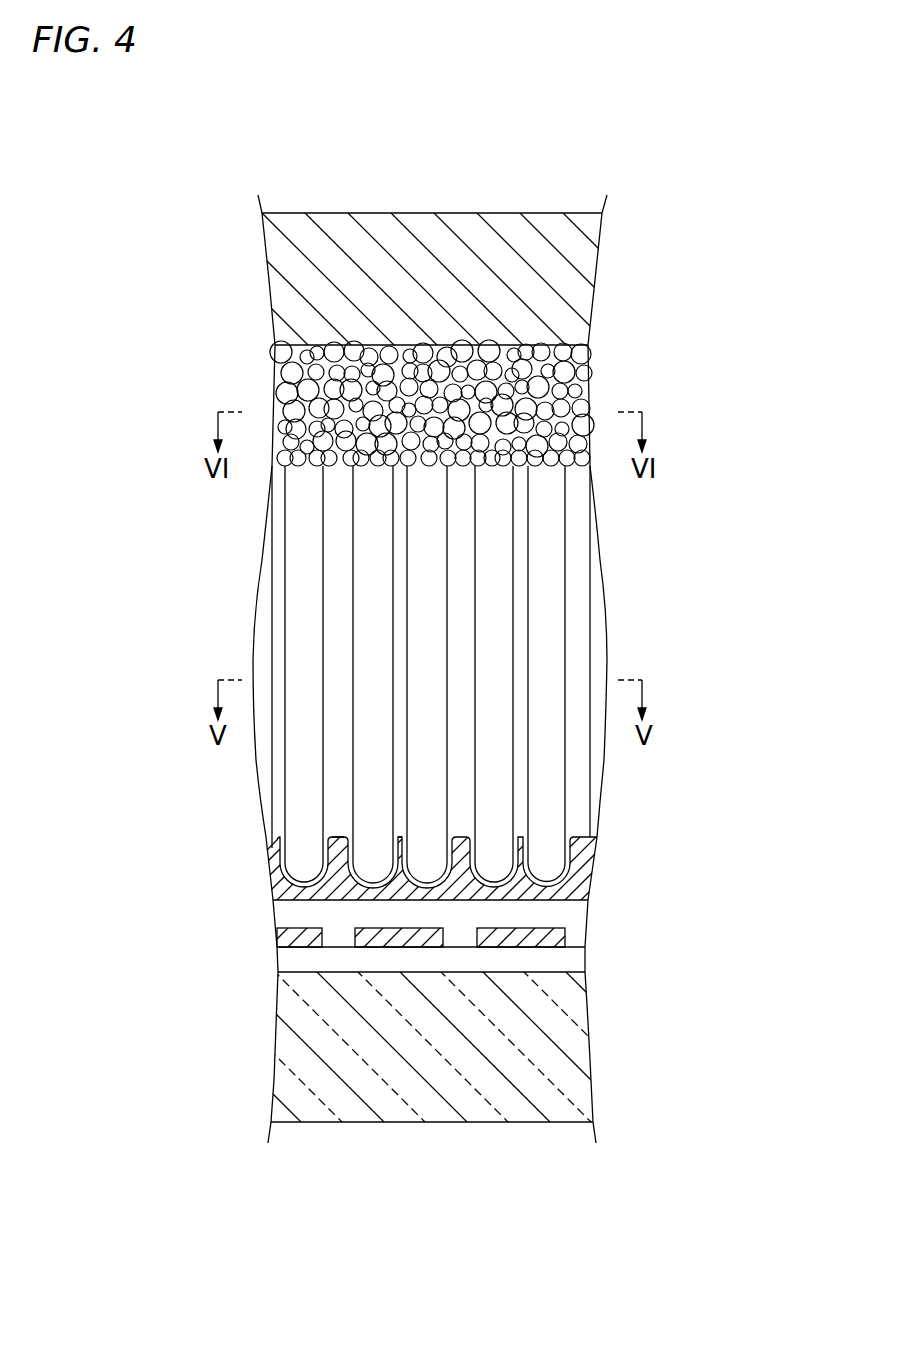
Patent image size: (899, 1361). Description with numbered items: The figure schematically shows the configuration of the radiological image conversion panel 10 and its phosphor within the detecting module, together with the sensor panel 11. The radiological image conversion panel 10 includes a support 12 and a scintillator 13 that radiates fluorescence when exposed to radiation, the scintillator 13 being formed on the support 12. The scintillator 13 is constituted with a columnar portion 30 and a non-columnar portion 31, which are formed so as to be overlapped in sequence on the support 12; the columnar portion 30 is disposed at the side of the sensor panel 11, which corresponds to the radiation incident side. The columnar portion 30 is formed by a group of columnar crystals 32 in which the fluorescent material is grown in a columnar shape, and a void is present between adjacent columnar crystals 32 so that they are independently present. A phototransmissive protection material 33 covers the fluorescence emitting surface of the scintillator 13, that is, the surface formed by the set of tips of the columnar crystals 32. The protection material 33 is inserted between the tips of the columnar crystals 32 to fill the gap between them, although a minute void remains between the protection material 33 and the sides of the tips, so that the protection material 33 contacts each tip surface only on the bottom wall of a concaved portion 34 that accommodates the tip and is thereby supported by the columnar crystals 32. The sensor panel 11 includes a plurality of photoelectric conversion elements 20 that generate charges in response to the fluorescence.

The radiological image conversion panel 10 is at (575, 193).
The sensor panel 11 is at (334, 1127).
The support 12 is at (573, 287).
The scintillator 13 is at (471, 645).
The photoelectric conversion elements 20 is at (560, 934).
The columnar portion 30 is at (443, 707).
The non-columnar portion 31 is at (588, 368).
The columnar crystals 32 is at (494, 584).
The protection material 33 is at (583, 868).
The concaved portion 34 is at (300, 855).